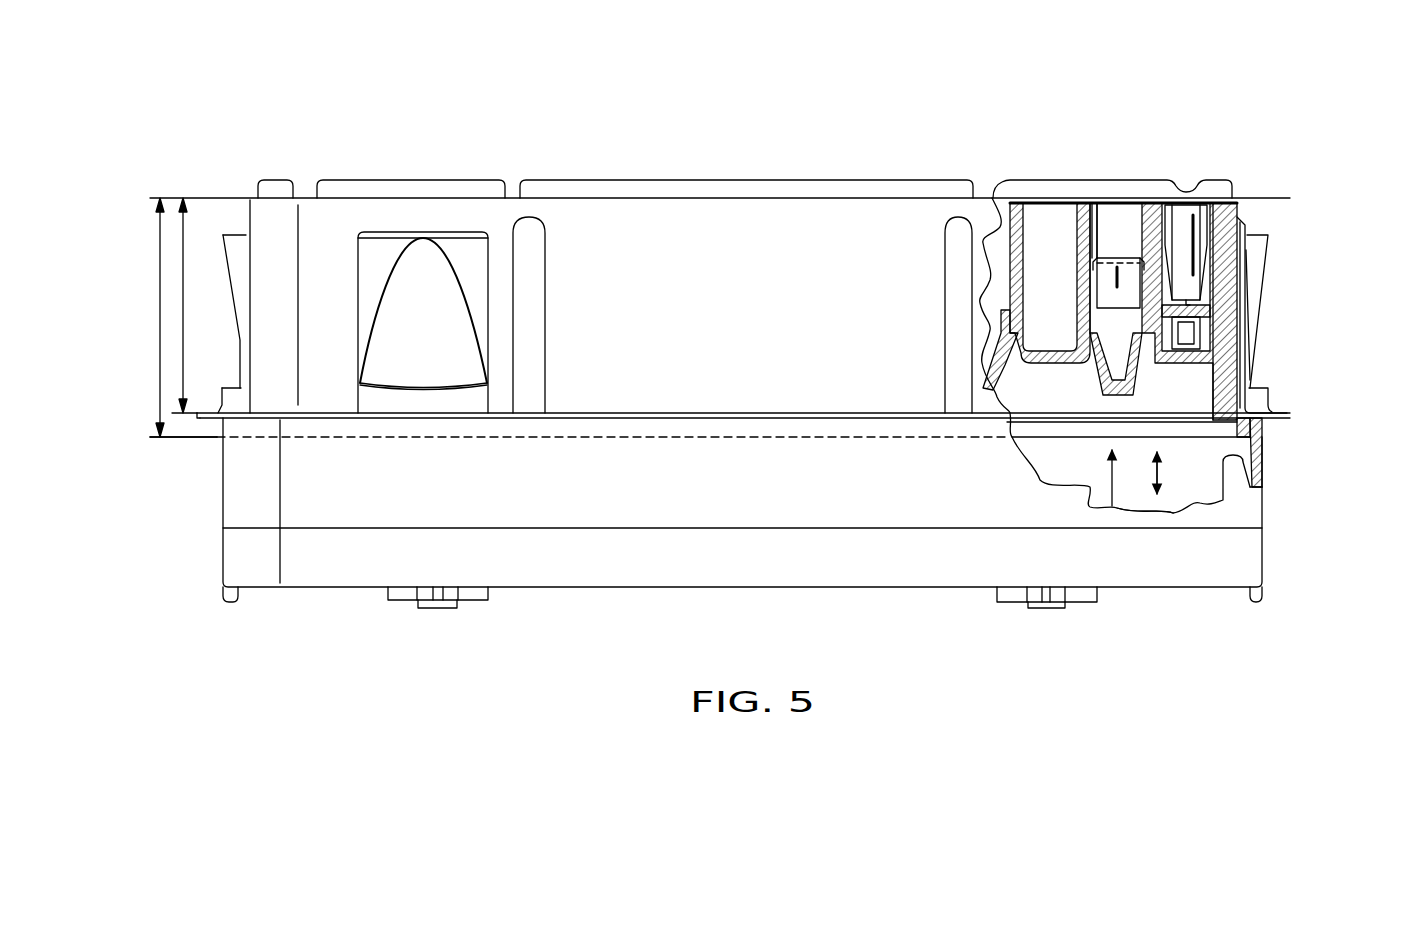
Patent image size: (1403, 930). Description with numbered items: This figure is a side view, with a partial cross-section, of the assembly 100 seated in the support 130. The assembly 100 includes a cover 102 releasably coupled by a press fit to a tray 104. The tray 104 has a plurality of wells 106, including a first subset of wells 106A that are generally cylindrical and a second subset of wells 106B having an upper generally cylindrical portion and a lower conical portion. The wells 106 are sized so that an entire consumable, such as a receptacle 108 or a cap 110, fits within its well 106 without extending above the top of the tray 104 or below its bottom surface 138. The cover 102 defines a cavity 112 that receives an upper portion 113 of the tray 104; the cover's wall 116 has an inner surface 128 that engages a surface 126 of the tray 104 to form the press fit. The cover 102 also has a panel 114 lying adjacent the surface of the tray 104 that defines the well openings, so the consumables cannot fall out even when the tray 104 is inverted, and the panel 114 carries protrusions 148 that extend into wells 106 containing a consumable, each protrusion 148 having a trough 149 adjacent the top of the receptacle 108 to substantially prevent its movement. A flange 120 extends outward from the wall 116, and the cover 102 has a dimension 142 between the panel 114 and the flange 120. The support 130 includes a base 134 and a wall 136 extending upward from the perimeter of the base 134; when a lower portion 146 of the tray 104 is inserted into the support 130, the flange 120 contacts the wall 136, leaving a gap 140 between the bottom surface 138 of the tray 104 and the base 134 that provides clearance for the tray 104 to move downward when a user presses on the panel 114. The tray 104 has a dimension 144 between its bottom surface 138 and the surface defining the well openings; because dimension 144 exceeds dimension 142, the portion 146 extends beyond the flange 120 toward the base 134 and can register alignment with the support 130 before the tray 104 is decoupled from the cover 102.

The assembly 100 is at (1219, 87).
The cover 102 is at (609, 245).
The tray 104 is at (1258, 428).
The wells 106 is at (1050, 272).
The first subset of wells 106A is at (1082, 175).
The second subset of wells 106B is at (1155, 175).
The receptacle 108 is at (1110, 293).
The cap 110 is at (1184, 243).
The cavity 112 is at (1046, 382).
The portion of tray 113 is at (1229, 347).
The panel 114 is at (701, 179).
The wall 116 is at (247, 283).
The flange 120 is at (203, 406).
The surface of tray 126 is at (1246, 288).
The inner surface 128 is at (1248, 250).
The support 130 is at (585, 512).
The base 134 is at (1183, 513).
The wall 136 is at (1262, 453).
The bottom surface 138 is at (1112, 508).
The gap 140 is at (1158, 475).
The dimension 142 is at (183, 248).
The dimension 144 is at (152, 392).
The portion of tray 146 is at (1264, 472).
The protrusions 148 is at (1097, 245).
The trough 149 is at (1096, 248).